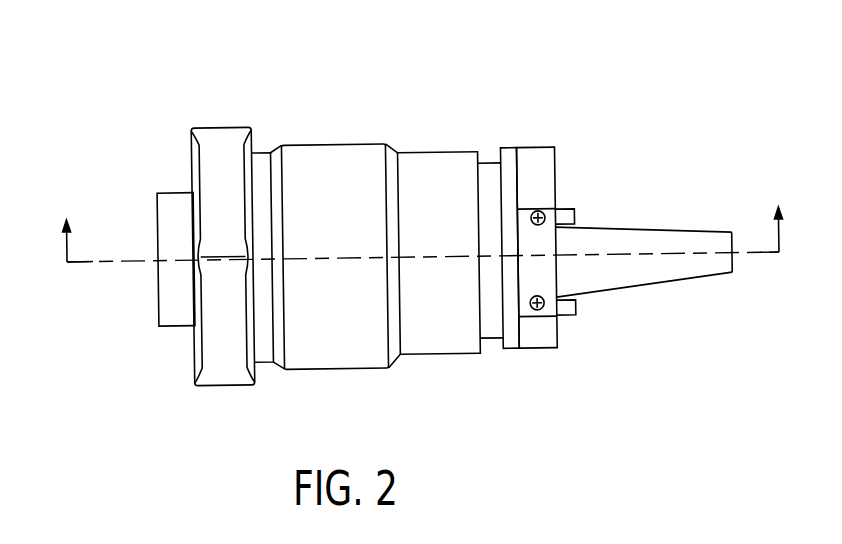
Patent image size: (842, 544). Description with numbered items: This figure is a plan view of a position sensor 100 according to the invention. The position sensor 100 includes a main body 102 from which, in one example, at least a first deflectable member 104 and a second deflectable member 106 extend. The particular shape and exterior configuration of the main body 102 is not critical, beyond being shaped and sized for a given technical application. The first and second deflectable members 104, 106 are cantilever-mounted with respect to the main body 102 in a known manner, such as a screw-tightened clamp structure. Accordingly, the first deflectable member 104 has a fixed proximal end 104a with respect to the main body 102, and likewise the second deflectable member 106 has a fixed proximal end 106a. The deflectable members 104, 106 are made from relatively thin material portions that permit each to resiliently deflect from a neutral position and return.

The position sensor 100 is at (205, 103).
The main body 102 is at (320, 347).
The first deflectable member 104 is at (663, 218).
The second deflectable member 106 is at (663, 218).
The fixed proximal end 104a is at (663, 187).
The fixed proximal end 106a is at (572, 233).